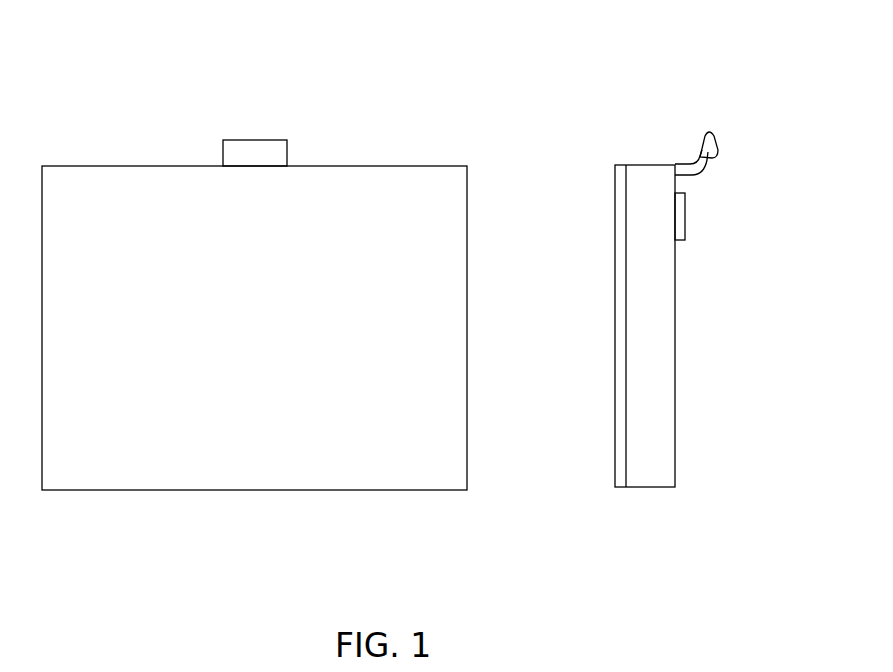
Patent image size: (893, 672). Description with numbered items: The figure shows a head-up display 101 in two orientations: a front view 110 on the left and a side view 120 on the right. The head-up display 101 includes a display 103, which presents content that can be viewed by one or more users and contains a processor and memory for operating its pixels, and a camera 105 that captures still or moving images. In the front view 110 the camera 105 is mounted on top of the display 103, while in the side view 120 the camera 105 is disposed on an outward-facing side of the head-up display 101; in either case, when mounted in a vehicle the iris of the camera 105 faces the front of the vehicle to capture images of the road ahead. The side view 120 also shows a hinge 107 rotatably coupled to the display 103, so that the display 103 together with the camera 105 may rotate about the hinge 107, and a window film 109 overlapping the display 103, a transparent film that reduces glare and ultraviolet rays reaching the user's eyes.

The head-up display 101 is at (132, 80).
The display 103 is at (468, 327).
The camera 105 is at (255, 140).
The hinge 107 is at (720, 143).
The window film 109 is at (615, 403).
The front view 110 is at (285, 520).
The side view 120 is at (657, 520).